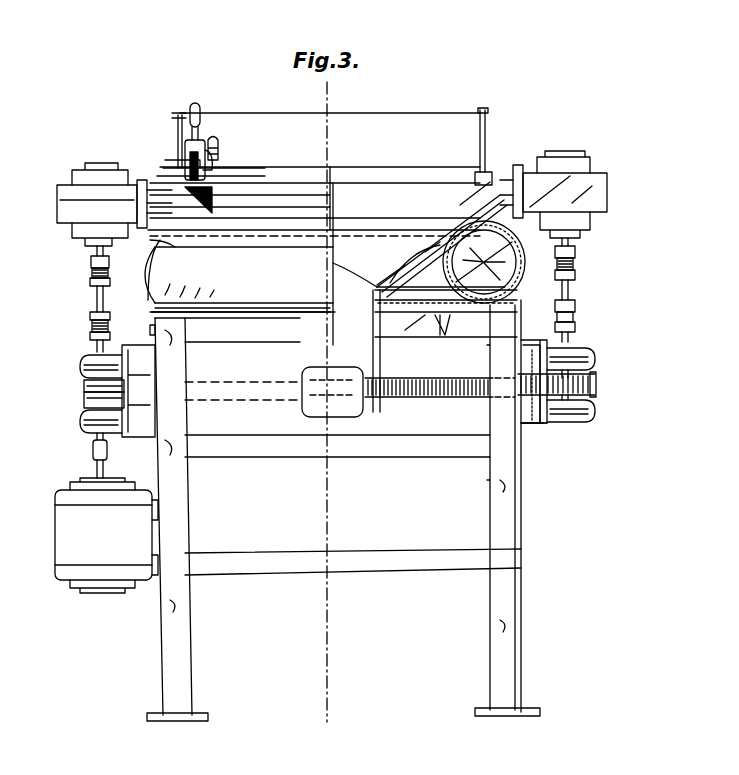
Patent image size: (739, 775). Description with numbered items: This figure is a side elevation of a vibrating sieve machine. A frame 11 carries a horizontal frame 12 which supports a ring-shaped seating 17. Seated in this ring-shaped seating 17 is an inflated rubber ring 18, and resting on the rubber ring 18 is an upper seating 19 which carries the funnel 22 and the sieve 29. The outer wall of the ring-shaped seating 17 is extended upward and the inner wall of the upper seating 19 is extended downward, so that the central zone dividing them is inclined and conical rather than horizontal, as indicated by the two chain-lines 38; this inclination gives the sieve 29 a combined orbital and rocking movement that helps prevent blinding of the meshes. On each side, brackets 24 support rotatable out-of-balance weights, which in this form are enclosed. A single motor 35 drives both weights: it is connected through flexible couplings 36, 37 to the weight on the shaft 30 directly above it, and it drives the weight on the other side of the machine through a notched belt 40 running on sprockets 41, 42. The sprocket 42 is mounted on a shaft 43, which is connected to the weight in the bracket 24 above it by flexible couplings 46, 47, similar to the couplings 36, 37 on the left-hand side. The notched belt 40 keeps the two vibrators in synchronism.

The frame 11 is at (517, 490).
The horizontal frame 12 is at (576, 324).
The ring-shaped seating 17 is at (576, 278).
The inflated rubber ring 18 is at (576, 250).
The upper seating 19 is at (498, 198).
The funnel 22 is at (470, 182).
The brackets 24 is at (96, 183).
The sieve 29 is at (435, 165).
The shaft 30 is at (92, 260).
The motor 35 is at (103, 555).
The flexible coupling 36 is at (92, 328).
The flexible coupling 37 is at (92, 283).
The chain-lines 38 is at (452, 243).
The notched belt 40 is at (420, 395).
The sprocket 41 is at (94, 400).
The sprocket 42 is at (592, 392).
The shaft 43 is at (574, 422).
The flexible coupling 46 is at (580, 348).
The flexible coupling 47 is at (576, 304).